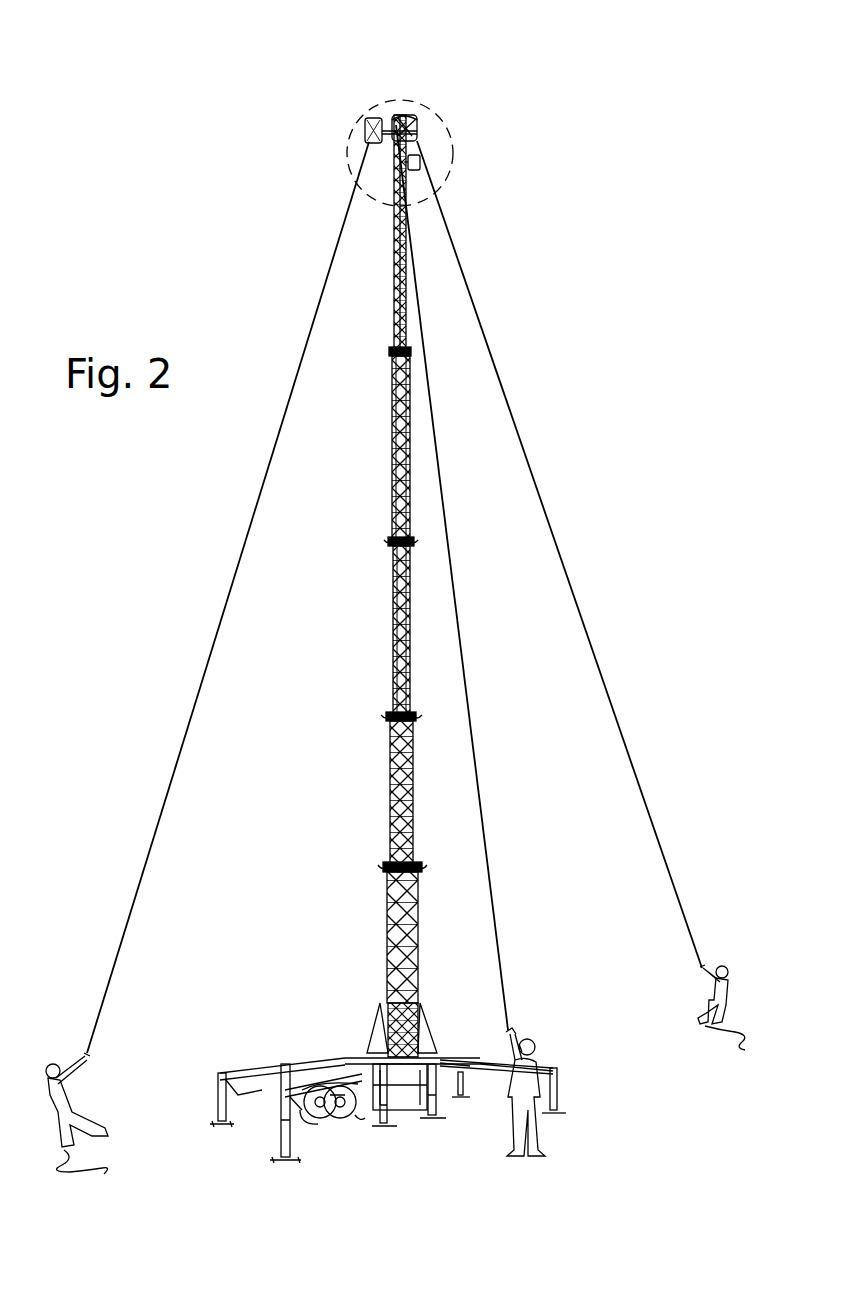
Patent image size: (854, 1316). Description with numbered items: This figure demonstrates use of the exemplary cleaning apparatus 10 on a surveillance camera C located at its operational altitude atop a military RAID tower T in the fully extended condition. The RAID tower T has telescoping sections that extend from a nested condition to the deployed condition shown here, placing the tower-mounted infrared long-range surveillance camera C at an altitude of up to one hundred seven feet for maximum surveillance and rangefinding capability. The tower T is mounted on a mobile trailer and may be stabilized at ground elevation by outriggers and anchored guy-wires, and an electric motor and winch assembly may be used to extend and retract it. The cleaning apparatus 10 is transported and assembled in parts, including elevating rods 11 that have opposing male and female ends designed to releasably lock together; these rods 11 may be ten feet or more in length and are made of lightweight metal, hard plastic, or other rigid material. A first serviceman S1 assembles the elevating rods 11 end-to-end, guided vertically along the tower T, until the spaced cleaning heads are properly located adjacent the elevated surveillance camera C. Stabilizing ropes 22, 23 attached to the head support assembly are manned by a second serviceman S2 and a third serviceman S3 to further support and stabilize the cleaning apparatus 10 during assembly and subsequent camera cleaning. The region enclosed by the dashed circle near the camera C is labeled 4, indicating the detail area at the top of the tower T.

The RAID tower T is at (360, 812).
The apparatus 10 is at (436, 128).
The surveillance camera C is at (374, 118).
The mast head section 4 is at (443, 187).
The stabilizing rope 22 is at (233, 568).
The stabilizing rope 23 is at (580, 613).
The elevating rods 11 is at (483, 810).
The first serviceman S1 is at (530, 1040).
The second serviceman S2 is at (722, 963).
The third serviceman S3 is at (54, 1063).